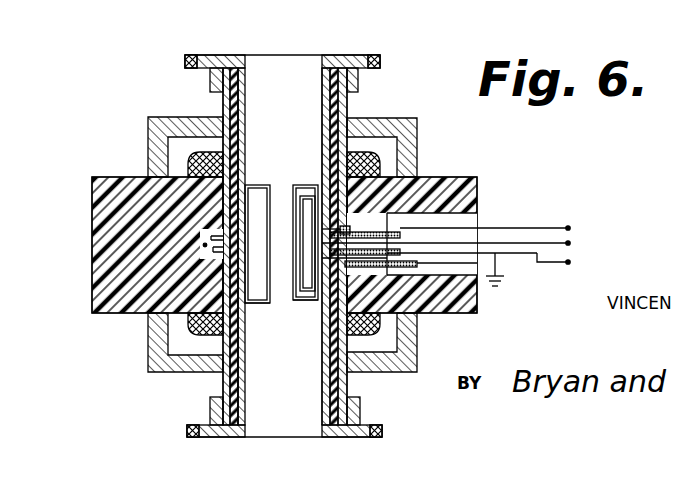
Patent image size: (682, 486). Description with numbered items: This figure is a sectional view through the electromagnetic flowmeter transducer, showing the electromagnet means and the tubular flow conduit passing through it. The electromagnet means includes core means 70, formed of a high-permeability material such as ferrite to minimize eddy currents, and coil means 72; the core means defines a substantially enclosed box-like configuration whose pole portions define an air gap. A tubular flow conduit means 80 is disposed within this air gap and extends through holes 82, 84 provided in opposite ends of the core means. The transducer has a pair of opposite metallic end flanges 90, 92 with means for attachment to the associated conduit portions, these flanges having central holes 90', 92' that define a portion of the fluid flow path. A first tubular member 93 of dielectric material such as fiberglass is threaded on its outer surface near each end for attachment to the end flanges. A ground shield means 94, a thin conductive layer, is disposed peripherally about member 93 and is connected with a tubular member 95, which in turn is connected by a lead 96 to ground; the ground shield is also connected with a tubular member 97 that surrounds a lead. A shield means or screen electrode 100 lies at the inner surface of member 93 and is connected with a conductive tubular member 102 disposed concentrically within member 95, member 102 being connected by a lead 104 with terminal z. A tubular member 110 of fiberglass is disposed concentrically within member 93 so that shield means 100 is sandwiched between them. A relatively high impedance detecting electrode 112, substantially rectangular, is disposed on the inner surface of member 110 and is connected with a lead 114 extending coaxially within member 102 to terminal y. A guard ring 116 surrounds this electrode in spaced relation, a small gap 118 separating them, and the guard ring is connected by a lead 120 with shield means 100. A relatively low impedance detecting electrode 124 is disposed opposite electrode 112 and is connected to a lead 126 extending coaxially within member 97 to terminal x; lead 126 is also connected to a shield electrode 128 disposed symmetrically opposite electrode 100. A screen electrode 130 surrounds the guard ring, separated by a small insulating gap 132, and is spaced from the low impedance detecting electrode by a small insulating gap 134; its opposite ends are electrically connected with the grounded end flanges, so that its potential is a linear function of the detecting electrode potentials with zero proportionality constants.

The core means 70 is at (134, 137).
The coil means 72 is at (162, 338).
The tubular flow conduit means 80 is at (360, 110).
The hole 82 is at (345, 377).
The hole 84 is at (232, 127).
The end flange 90 is at (198, 417).
The central hole 90' is at (314, 417).
The end flange 92 is at (357, 55).
The central hole 92' is at (264, 52).
The first tubular member 93 is at (228, 380).
The ground shield means 94 is at (213, 403).
The tubular member 95 is at (382, 228).
The lead 96 is at (430, 270).
The tubular member 97 is at (214, 224).
The shield means 100 is at (332, 383).
The conductive tubular member 102 is at (400, 238).
The lead 104 is at (512, 258).
The tubular member 110 is at (236, 382).
The high impedance detecting electrode 112 is at (302, 184).
The lead 114 is at (500, 242).
The guard ring 116 is at (310, 302).
The gap 118 is at (265, 296).
The lead 120 is at (352, 292).
The low impedance detecting electrode 124 is at (260, 184).
The lead 126 is at (203, 247).
The shield electrode 128 is at (245, 362).
The screen electrode 130 is at (246, 96).
The insulating gap 132 is at (310, 198).
The insulating gap 134 is at (253, 300).